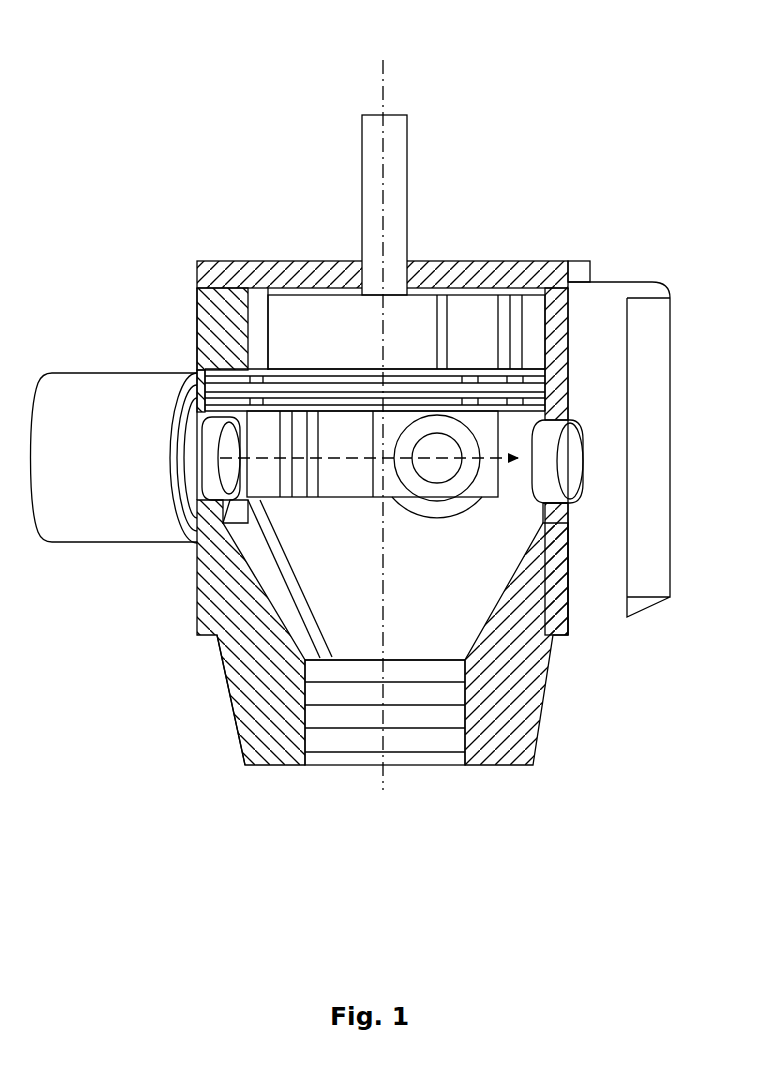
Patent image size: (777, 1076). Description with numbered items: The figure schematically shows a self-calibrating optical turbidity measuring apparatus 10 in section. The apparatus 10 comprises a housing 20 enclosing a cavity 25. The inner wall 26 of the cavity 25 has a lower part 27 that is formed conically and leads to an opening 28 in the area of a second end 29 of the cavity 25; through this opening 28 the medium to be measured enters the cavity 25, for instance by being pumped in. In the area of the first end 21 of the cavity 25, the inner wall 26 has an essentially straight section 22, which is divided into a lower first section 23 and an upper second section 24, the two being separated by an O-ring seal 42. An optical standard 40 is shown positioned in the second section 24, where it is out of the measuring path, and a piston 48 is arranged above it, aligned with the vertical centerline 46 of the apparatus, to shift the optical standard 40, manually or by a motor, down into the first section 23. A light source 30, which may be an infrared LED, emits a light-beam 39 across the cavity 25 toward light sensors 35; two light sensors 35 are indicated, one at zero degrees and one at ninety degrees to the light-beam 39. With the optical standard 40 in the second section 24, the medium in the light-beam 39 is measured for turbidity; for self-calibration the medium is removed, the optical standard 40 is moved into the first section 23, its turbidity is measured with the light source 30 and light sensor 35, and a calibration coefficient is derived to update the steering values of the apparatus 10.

The self-calibrating optical turbidity measuring apparatus 10 is at (210, 88).
The housing 20 is at (196, 620).
The first end 21 is at (170, 352).
The section 22 is at (545, 320).
The first section 23 is at (589, 450).
The second section 24 is at (185, 309).
The cavity 25 is at (338, 609).
The inner wall 26 is at (512, 582).
The lower part 27 is at (480, 636).
The opening 28 is at (361, 775).
The second end 29 is at (224, 755).
The light source 30 is at (96, 462).
The light sensor 35 is at (435, 468).
The light-beam 39 is at (355, 462).
The optical standard 40 is at (318, 310).
The O-ring seal 42 is at (535, 395).
The central axis 46 is at (383, 93).
The piston 48 is at (393, 213).